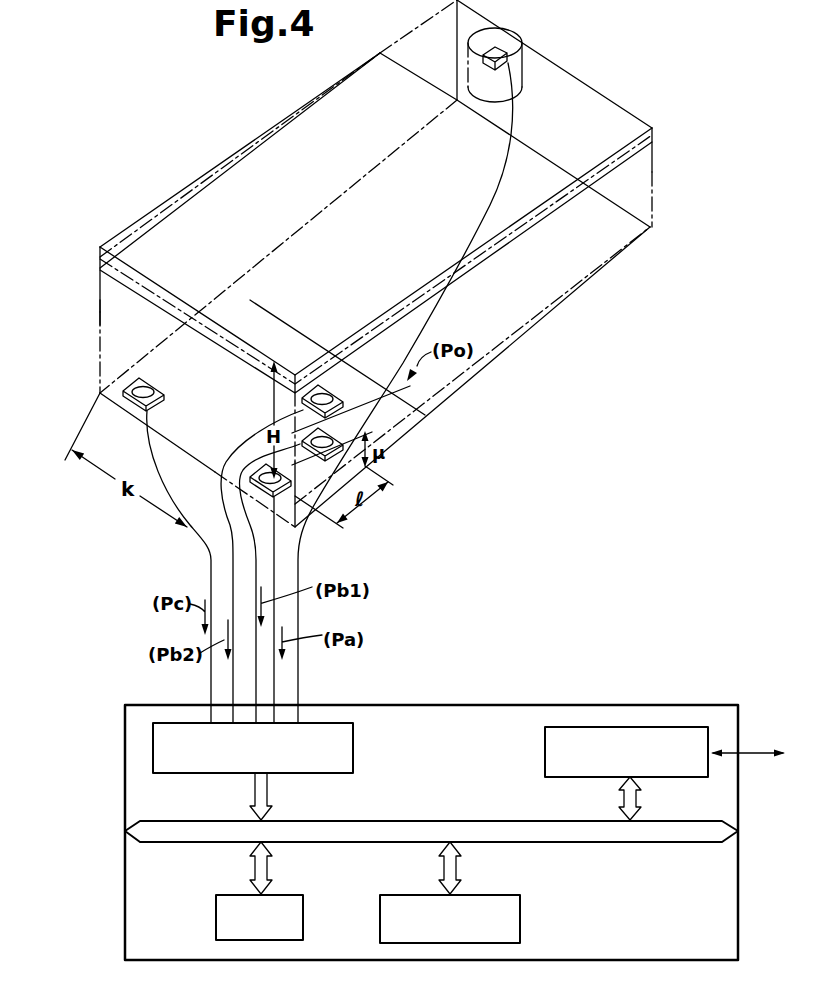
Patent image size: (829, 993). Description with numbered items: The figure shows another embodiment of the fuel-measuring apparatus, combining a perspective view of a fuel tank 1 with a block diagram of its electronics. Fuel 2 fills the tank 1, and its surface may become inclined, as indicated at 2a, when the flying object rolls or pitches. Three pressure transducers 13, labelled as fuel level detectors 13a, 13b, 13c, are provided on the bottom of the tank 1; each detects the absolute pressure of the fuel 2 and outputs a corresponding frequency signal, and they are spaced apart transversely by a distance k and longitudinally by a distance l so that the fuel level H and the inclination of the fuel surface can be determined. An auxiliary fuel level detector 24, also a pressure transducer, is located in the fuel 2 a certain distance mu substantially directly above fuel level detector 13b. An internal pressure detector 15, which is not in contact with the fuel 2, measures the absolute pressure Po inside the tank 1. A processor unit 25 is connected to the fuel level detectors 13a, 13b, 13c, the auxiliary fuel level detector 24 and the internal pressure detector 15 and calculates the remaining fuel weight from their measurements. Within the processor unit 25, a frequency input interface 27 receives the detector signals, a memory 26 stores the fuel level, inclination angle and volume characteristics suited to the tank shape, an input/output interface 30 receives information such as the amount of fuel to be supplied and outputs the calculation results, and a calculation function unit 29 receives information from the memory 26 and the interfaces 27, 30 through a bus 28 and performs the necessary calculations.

The fuel tank 1 is at (268, 130).
The fuel 2 is at (620, 123).
The inclined fuel surface 2a is at (100, 312).
The pressure transducers 13 is at (247, 377).
The fuel level detector 13a is at (277, 467).
The fuel level detector 13b is at (307, 425).
The fuel level detector 13c is at (153, 411).
The internal pressure detector 15 is at (507, 50).
The auxiliary fuel level detector 24 is at (333, 402).
The processor unit 25 is at (464, 708).
The memory 26 is at (216, 907).
The frequency input interface 27 is at (153, 741).
The bus 28 is at (133, 838).
The calculation function unit 29 is at (520, 898).
The input/output interface 30 is at (640, 727).